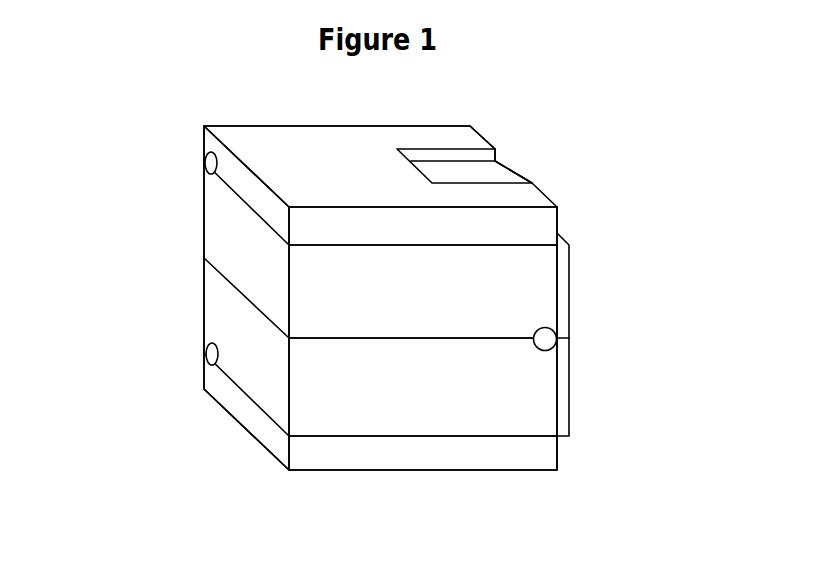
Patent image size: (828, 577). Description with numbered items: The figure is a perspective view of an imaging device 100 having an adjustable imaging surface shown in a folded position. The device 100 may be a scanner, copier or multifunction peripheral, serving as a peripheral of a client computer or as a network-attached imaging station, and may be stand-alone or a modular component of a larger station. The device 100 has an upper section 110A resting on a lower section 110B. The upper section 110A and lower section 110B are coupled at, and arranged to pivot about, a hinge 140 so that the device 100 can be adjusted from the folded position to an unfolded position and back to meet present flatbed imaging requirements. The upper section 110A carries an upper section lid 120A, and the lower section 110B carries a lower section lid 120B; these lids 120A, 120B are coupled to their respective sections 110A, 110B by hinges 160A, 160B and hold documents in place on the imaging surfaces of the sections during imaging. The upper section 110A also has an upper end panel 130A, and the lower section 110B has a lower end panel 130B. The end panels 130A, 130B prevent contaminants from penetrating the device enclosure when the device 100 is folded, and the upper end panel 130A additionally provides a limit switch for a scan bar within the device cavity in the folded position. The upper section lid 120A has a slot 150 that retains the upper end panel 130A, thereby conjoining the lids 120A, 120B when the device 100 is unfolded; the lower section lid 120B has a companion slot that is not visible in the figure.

The imaging device 100 is at (518, 90).
The upper section 110A is at (204, 209).
The lower section 110B is at (204, 316).
The upper section lid 120A is at (242, 125).
The lower section lid 120B is at (241, 423).
The upper end panel 130A is at (570, 290).
The lower end panel 130B is at (570, 385).
The hinge 140 is at (533, 332).
The slot 150 is at (510, 173).
The hinge 160A is at (193, 162).
The hinge 160B is at (193, 352).